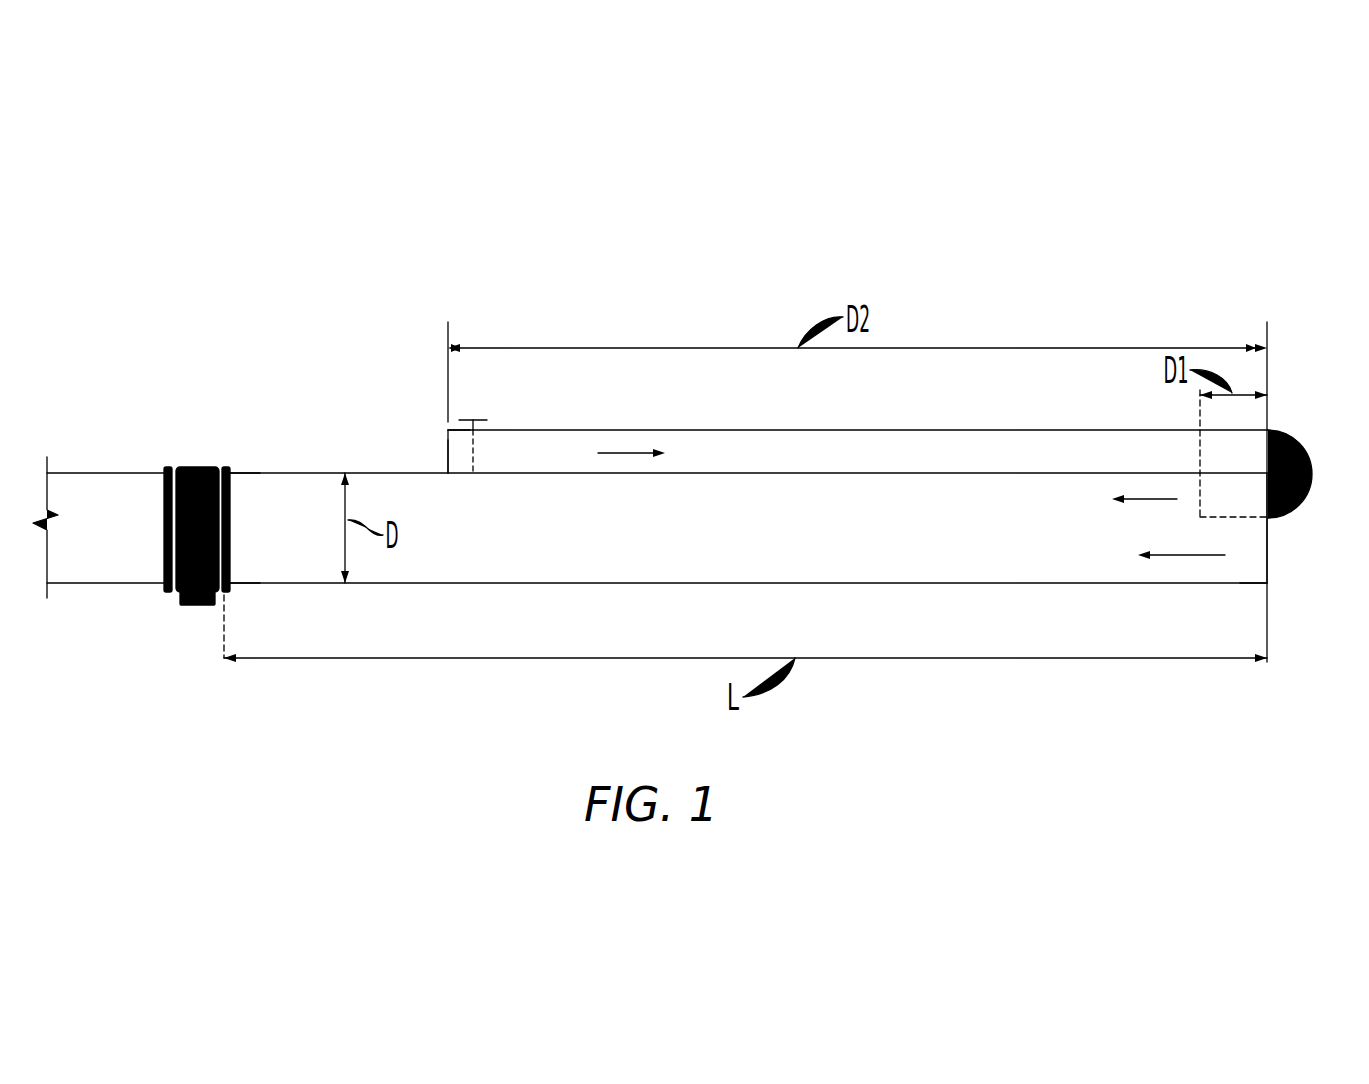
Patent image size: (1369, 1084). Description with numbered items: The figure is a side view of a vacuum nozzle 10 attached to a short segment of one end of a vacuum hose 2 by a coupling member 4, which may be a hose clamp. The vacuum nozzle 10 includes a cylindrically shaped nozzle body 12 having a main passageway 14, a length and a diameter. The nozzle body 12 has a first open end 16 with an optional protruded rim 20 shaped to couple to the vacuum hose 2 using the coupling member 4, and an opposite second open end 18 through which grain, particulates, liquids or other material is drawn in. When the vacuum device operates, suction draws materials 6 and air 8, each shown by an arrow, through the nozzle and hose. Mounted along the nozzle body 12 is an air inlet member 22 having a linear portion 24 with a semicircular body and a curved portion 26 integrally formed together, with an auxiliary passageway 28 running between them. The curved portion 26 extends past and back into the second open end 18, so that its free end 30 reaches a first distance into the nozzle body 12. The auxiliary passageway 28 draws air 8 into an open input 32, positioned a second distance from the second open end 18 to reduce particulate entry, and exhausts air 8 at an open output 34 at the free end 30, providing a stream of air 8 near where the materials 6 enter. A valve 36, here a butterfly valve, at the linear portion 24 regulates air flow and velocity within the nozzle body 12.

The vacuum hose 2 is at (98, 497).
The coupling member 4 is at (200, 475).
The materials 6 is at (600, 453).
The air 8 is at (1200, 553).
The vacuum nozzle 10 is at (1120, 237).
The nozzle body 12 is at (845, 543).
The main passageway 14 is at (1273, 547).
The first open end 16 is at (233, 562).
The second open end 18 is at (1268, 567).
The protruded rim 20 is at (227, 470).
The air inlet member 22 is at (939, 466).
The linear portion 24 is at (748, 440).
The curved portion 26 is at (1290, 467).
The auxiliary passageway 28 is at (440, 457).
The free end 30 is at (1227, 507).
The open input 32 is at (448, 432).
The open output 34 is at (1202, 498).
The valve 36 is at (478, 418).